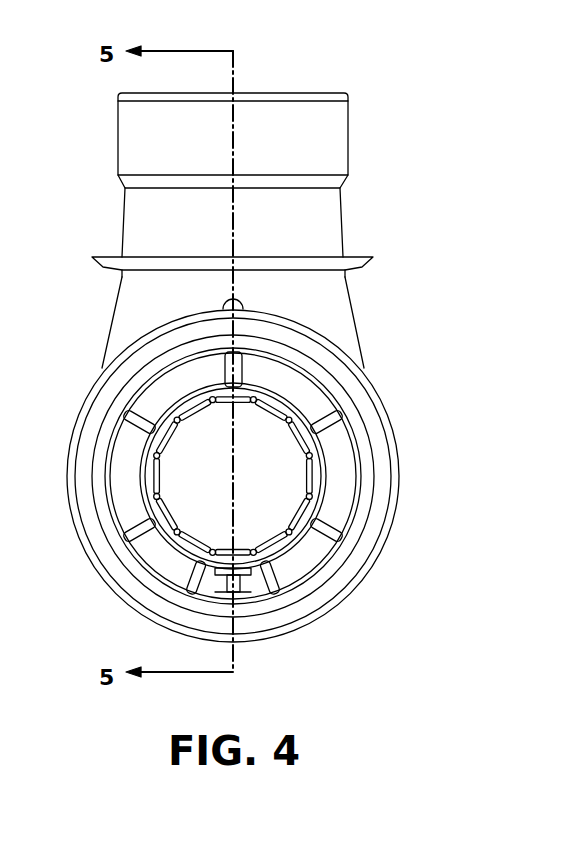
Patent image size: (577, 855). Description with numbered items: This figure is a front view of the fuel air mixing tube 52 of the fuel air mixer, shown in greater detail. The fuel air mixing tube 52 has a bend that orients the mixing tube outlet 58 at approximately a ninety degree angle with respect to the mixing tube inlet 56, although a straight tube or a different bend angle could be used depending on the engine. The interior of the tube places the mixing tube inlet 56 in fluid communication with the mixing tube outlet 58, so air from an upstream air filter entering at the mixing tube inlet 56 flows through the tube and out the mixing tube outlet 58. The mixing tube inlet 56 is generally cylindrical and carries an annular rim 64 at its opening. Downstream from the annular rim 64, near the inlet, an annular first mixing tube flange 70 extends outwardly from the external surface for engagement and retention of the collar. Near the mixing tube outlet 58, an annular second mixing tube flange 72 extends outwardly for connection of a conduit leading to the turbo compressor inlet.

The fuel air mixing tube 52 is at (264, 349).
The mixing tube inlet 56 is at (273, 122).
The mixing tube outlet 58 is at (176, 532).
The annular rim 64 is at (318, 93).
The first mixing tube flange 70 is at (360, 256).
The second mixing tube flange 72 is at (393, 428).